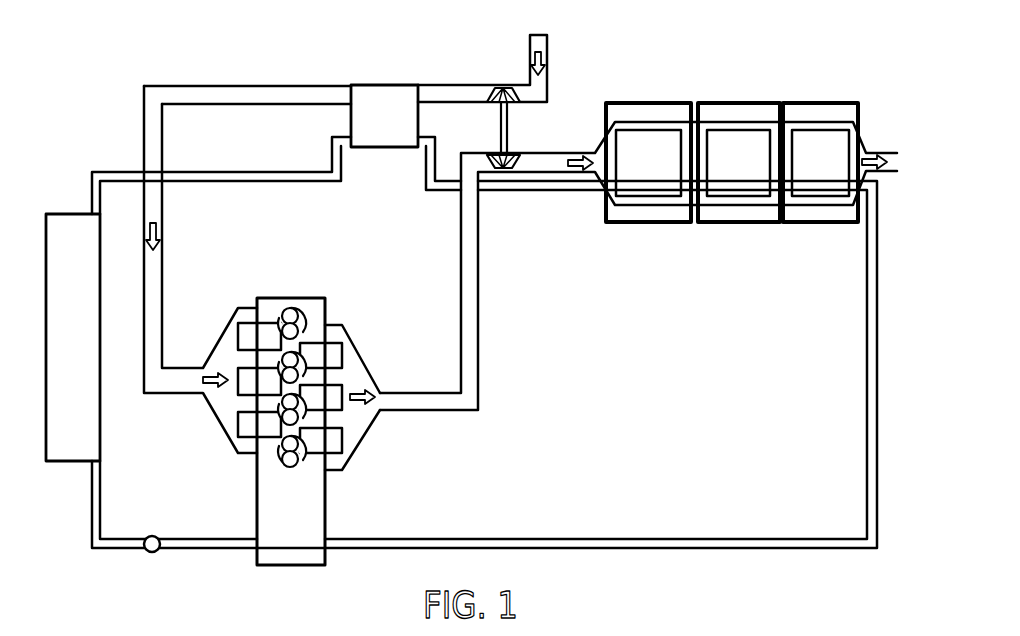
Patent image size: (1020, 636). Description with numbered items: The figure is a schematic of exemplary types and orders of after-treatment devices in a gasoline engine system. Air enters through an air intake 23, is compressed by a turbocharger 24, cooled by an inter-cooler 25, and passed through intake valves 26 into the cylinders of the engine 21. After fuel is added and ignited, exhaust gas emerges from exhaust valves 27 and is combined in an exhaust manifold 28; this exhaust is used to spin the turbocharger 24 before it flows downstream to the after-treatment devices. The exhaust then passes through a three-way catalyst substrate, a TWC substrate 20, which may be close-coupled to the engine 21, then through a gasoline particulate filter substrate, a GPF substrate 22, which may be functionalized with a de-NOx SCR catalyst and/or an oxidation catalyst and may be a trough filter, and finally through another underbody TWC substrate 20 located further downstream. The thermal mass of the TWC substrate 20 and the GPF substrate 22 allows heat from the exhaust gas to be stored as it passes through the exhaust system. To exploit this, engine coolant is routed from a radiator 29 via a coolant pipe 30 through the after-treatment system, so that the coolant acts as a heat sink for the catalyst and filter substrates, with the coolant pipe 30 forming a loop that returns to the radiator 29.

The TWC substrate 20 is at (637, 197).
The engine 21 is at (327, 510).
The gasoline particulate filter substrate 22 is at (735, 197).
The air intake 23 is at (548, 45).
The turbocharger 24 is at (508, 123).
The inter-cooler 25 is at (380, 93).
The intake valves 26 is at (287, 445).
The exhaust valves 27 is at (289, 464).
The exhaust manifold 28 is at (368, 425).
The radiator 29 is at (63, 213).
The coolant pipe 30 is at (867, 358).